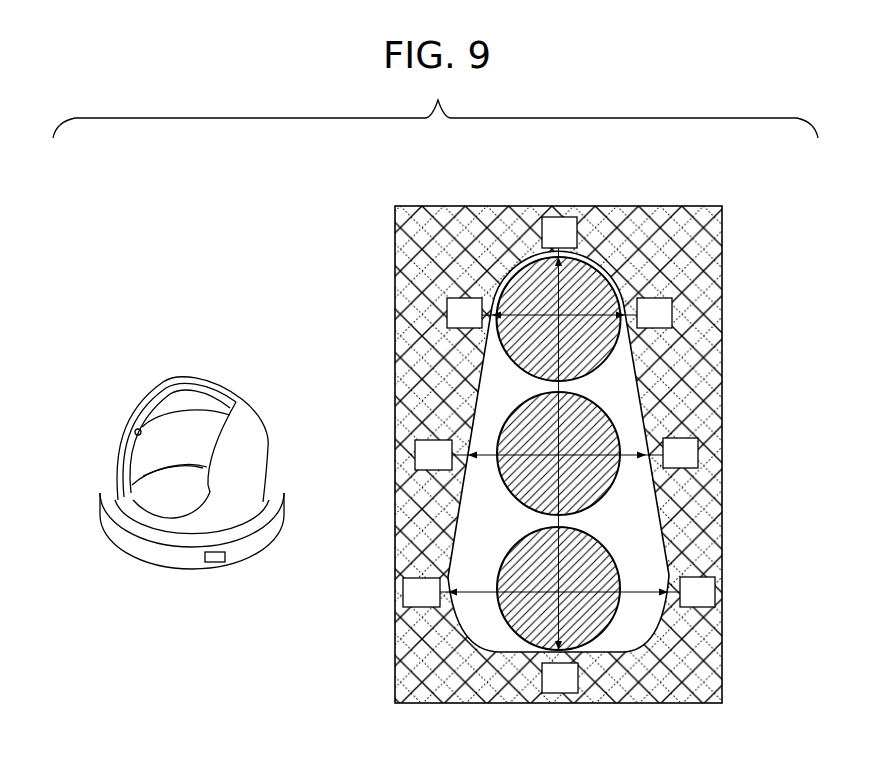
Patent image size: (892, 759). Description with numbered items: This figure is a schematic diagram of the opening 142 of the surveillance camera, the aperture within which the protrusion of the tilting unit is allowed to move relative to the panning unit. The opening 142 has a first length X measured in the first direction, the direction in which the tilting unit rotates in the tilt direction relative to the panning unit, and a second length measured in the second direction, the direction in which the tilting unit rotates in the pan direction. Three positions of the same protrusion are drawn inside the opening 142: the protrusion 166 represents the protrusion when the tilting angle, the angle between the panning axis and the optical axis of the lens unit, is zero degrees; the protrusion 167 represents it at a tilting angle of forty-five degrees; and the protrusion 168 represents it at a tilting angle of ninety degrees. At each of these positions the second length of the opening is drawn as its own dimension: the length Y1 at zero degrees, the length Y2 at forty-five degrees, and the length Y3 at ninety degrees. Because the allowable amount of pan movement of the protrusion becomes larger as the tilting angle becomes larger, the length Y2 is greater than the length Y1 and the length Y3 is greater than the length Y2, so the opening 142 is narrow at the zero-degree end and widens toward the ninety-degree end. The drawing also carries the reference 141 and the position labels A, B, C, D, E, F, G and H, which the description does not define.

The holding member 141 is at (427, 272).
The opening 142 is at (653, 632).
The protrusion 166 is at (592, 278).
The protrusion 167 is at (590, 417).
The protrusion 168 is at (600, 548).
The first length X is at (558, 613).
The length Y1 is at (610, 289).
The length Y2 is at (607, 443).
The length Y3 is at (610, 580).
The position A is at (140, 349).
The position B is at (102, 402).
The position C is at (81, 463).
The position D is at (157, 517).
The position E is at (210, 492).
The position F is at (217, 443).
The position G is at (235, 407).
The position H is at (203, 378).